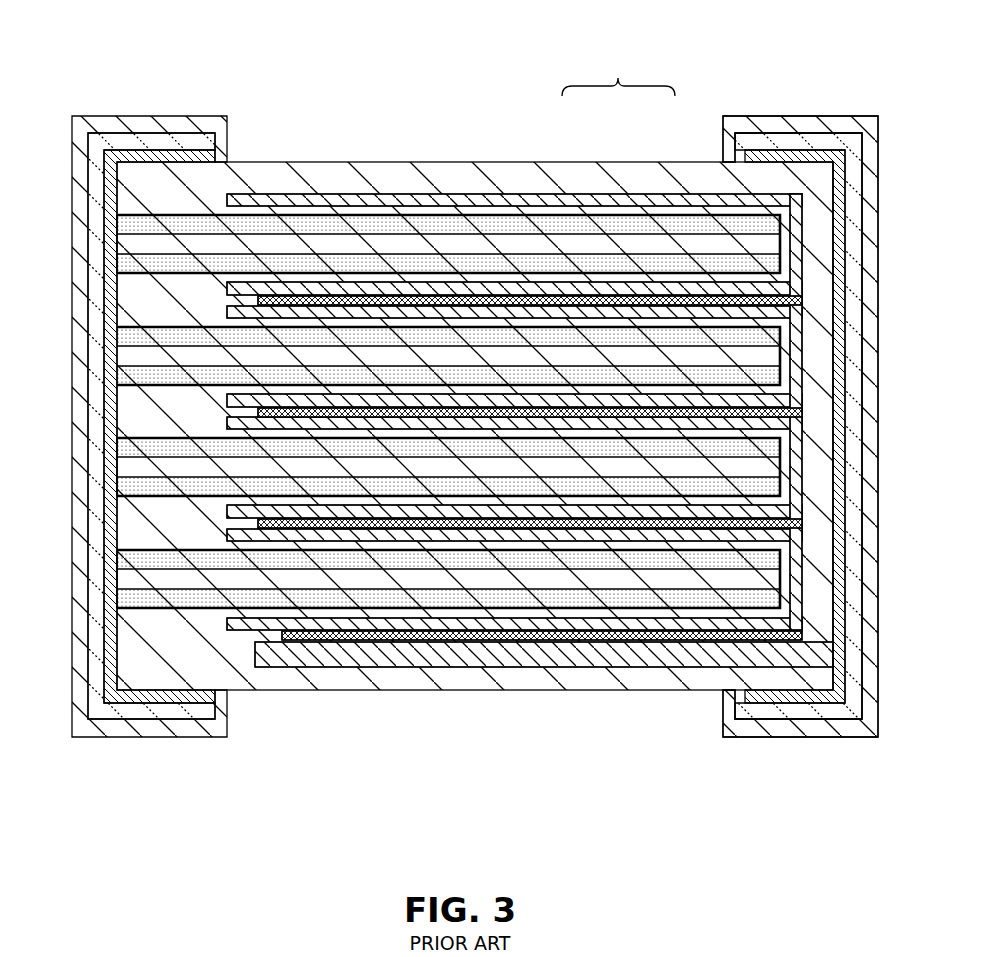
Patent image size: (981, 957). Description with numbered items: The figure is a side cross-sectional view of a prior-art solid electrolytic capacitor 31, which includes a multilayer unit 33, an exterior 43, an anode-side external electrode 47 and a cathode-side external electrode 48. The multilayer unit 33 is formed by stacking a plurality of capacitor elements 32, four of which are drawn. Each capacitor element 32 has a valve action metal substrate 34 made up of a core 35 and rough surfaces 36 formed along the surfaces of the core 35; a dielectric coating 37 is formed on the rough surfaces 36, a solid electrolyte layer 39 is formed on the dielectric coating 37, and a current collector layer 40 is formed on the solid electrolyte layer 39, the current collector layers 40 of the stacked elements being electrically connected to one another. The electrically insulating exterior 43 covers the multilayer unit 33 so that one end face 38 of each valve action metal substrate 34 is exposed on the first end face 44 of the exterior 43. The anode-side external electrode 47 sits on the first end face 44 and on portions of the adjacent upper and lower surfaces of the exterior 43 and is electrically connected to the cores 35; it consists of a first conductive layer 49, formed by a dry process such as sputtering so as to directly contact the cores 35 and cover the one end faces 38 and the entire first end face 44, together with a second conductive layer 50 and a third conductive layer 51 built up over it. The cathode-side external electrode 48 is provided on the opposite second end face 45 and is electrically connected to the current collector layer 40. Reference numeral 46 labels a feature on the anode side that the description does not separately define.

The solid electrolytic capacitor 31 is at (427, 23).
The capacitor element 32 is at (805, 332).
The multilayer unit 33 is at (448, 189).
The valve action metal substrate 34 is at (618, 68).
The core 35 is at (563, 243).
The rough surface 36 is at (642, 266).
The dielectric coating 37 is at (371, 200).
The one end face 38 is at (92, 237).
The solid electrolyte layer 39 is at (358, 624).
The current collector layer 40 is at (448, 652).
The exterior 43 is at (254, 160).
The first end face 44 is at (103, 410).
The second end face 45 is at (840, 383).
The third connection portion 46 is at (88, 538).
The anode-side external electrode 47 is at (475, 385).
The cathode-side external electrode 48 is at (832, 114).
The first conductive layer 49 is at (840, 453).
The second conductive layer 50 is at (92, 591).
The third conductive layer 51 is at (80, 632).